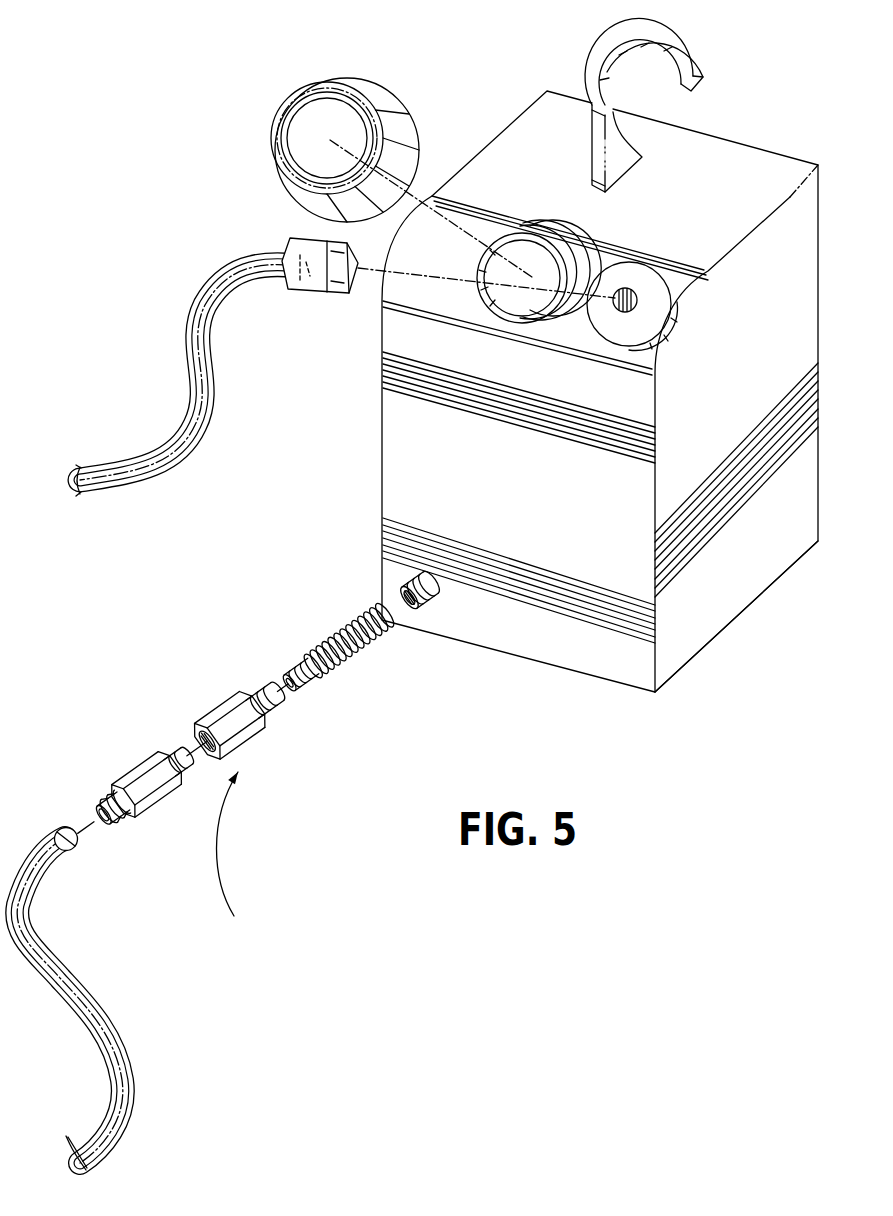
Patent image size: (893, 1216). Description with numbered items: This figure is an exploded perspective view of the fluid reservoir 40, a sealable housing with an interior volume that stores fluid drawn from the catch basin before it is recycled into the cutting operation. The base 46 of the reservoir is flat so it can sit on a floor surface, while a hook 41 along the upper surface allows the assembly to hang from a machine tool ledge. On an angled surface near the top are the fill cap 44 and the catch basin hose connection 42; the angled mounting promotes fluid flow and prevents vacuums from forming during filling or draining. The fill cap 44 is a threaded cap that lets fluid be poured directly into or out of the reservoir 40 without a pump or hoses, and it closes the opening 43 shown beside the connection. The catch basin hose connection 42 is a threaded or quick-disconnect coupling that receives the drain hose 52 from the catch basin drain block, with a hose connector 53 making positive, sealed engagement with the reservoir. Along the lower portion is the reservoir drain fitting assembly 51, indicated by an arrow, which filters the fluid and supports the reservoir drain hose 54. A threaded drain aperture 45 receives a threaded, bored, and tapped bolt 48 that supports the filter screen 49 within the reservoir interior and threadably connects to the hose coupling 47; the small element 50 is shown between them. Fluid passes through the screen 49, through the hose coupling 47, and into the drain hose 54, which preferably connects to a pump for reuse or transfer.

The fluid reservoir 40 is at (824, 137).
The hook 41 is at (612, 62).
The catch basin hose connection 42 is at (653, 300).
The fill opening 43 is at (588, 250).
The fill cap 44 is at (412, 131).
The threaded drain aperture 45 is at (419, 590).
The base 46 is at (728, 627).
The hose coupling 47 is at (145, 785).
The bored bolt 48 is at (240, 717).
The filter screen 49 is at (349, 640).
The valve plug 50 is at (300, 675).
The reservoir drain fitting assembly 51 is at (240, 852).
The drain hose 52 is at (191, 310).
The hose connector 53 is at (296, 240).
The reservoir drain hose 54 is at (88, 973).